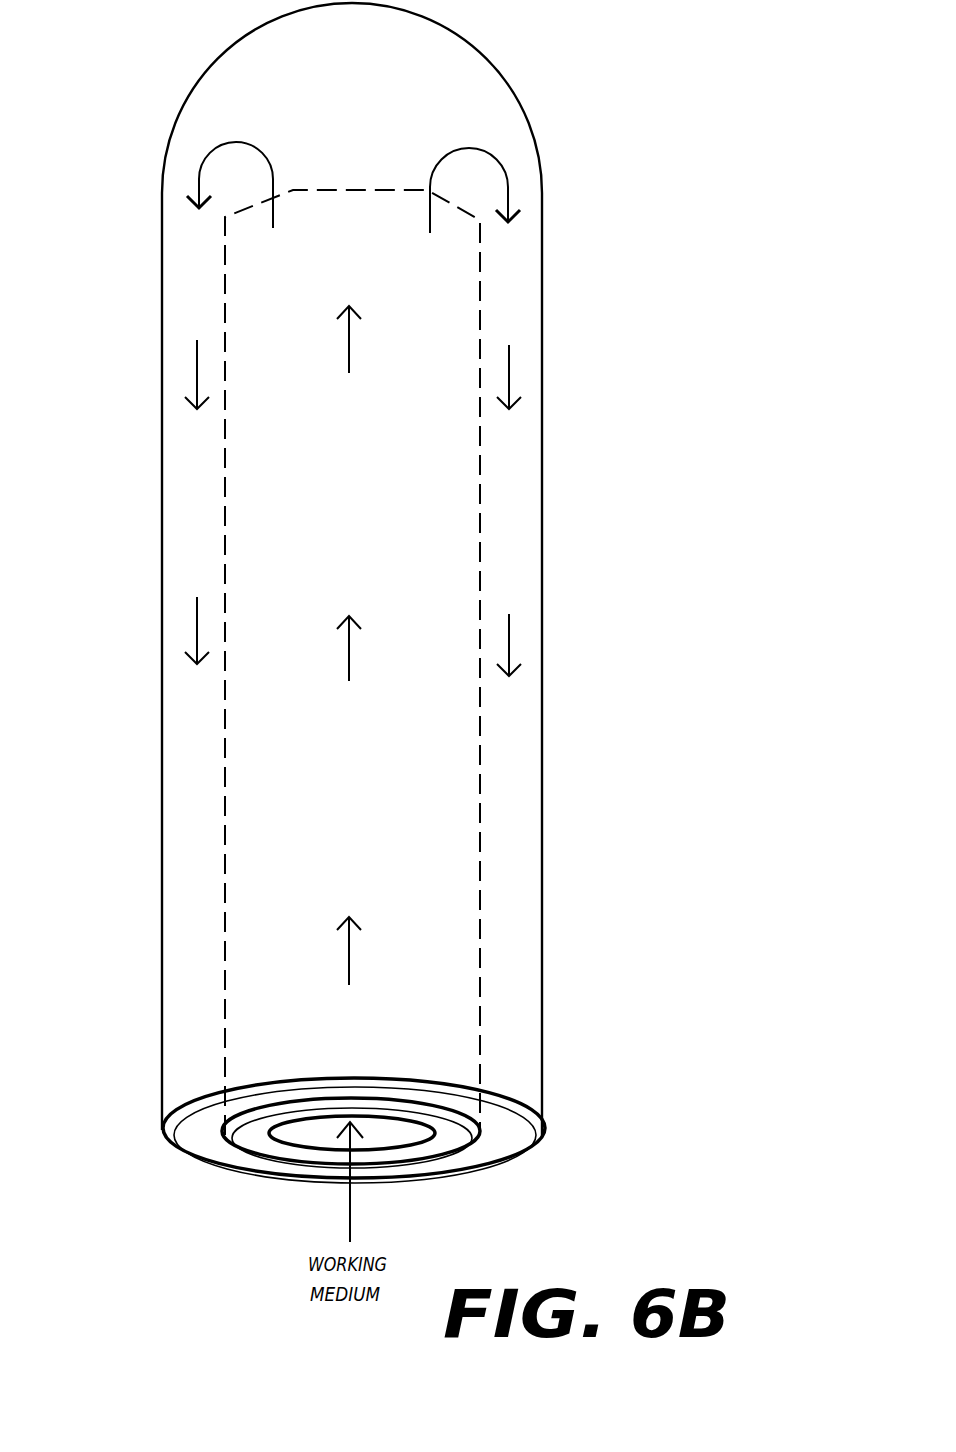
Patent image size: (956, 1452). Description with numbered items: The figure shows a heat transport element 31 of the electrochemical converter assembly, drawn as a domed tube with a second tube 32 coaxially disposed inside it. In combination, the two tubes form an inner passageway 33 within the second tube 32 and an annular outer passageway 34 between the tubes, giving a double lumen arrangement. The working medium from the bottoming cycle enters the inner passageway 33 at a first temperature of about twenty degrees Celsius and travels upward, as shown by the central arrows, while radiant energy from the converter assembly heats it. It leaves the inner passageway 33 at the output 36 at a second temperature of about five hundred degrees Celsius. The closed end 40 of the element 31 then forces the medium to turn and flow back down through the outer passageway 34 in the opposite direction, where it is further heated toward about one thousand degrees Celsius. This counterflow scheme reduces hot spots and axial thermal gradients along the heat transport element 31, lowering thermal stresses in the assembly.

The closed end 40 is at (408, 622).
The heat transport element 31 is at (543, 504).
The output 36 is at (430, 248).
The second tube 32 is at (163, 1133).
The outer passageway 34 is at (502, 1133).
The inner passageway 33 is at (405, 1138).